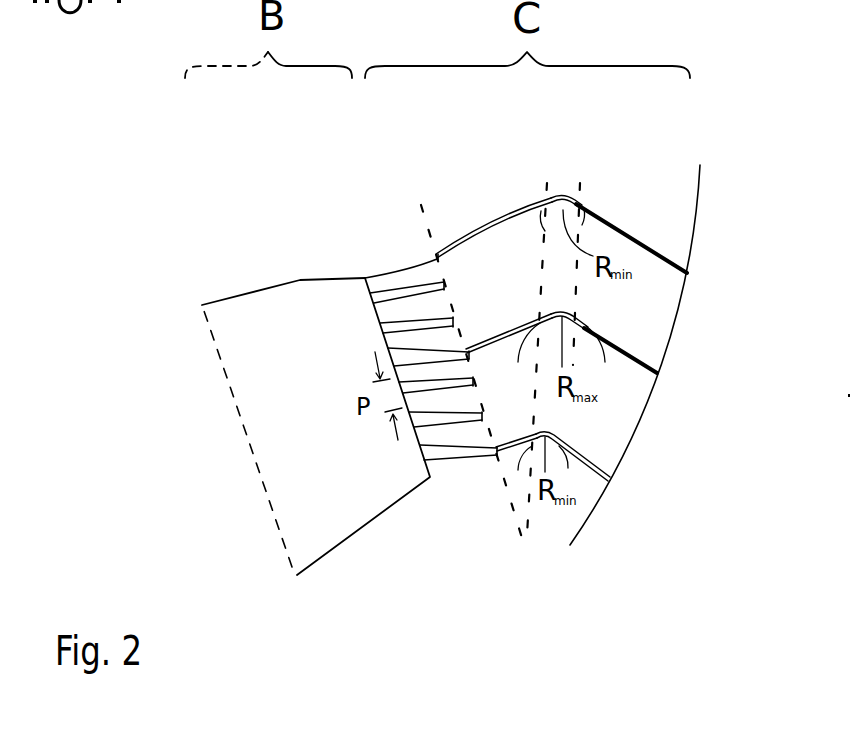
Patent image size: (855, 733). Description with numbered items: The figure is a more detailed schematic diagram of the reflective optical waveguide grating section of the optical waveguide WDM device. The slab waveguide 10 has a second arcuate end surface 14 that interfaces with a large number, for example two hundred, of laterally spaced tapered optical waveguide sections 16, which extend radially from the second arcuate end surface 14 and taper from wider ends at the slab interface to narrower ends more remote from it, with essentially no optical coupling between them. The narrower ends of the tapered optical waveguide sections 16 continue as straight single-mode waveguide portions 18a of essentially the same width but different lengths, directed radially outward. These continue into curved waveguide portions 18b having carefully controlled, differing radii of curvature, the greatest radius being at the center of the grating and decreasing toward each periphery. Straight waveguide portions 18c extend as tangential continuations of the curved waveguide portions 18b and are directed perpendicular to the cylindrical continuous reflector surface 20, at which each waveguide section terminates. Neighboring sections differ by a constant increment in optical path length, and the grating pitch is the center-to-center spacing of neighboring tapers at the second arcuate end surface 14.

The slab waveguide 10 is at (340, 543).
The second arcuate end surface 14 is at (372, 303).
The tapered optical waveguide sections 16 is at (404, 266).
The straight waveguide portions 18a is at (481, 230).
The curved waveguide portions 18b is at (573, 236).
The straight waveguide portions 18c is at (627, 236).
The continuous reflector surface 20 is at (673, 335).